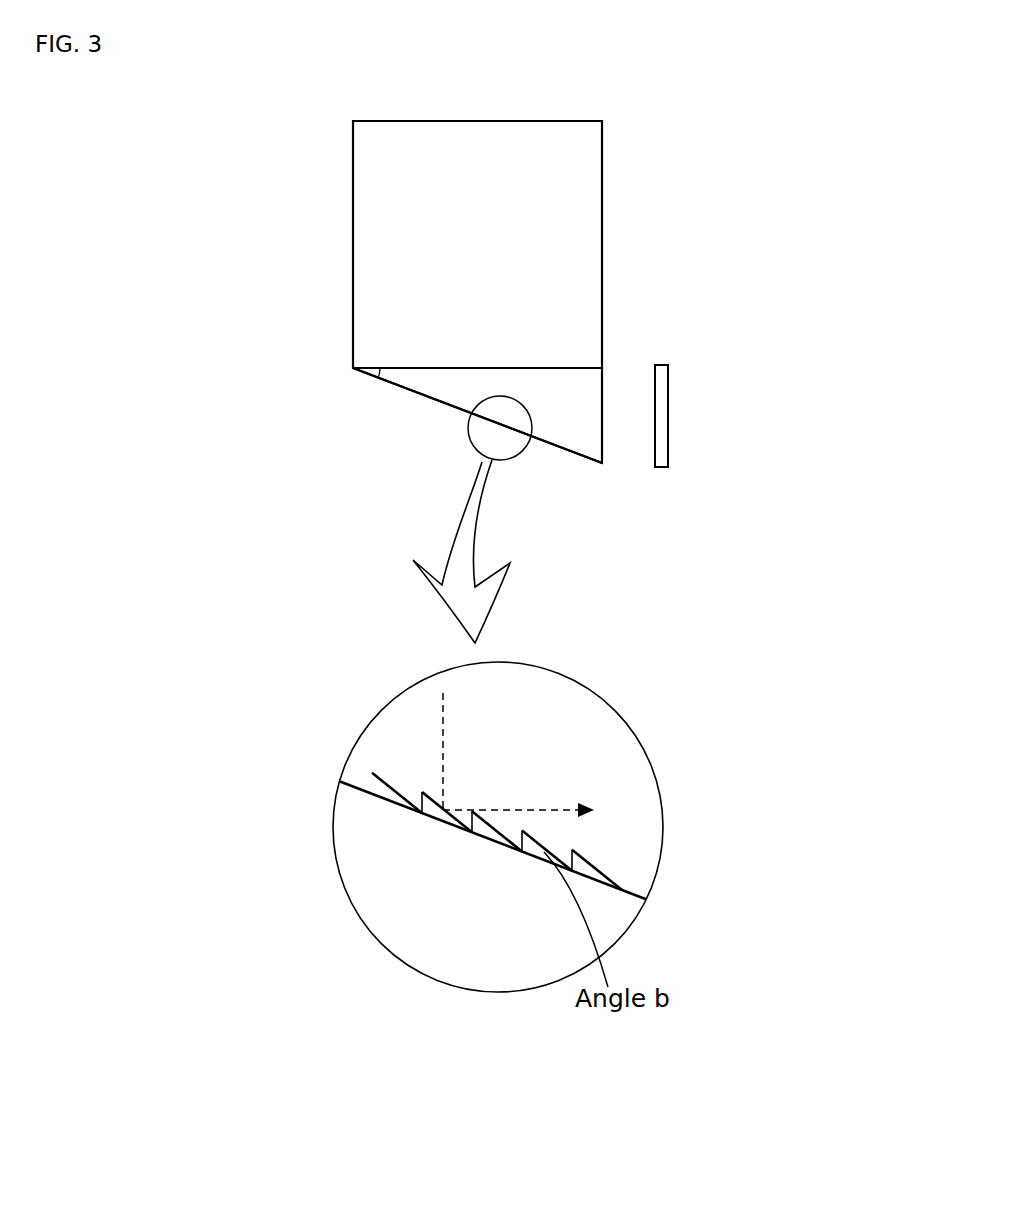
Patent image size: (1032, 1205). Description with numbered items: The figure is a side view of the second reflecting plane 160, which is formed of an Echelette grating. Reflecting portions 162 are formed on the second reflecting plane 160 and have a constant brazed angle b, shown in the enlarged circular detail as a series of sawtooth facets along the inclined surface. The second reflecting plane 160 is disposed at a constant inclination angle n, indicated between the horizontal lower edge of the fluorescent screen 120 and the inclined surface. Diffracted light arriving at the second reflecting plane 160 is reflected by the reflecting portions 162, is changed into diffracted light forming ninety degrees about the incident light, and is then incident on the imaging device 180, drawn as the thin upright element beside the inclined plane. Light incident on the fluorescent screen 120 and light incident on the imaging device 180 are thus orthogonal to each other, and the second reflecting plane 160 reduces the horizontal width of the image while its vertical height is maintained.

The fluorescent screen 120 is at (602, 221).
The inclination angle n is at (383, 380).
The second reflecting plane 160 is at (452, 407).
The reflecting portions 162 is at (398, 790).
The imaging device 180 is at (668, 406).